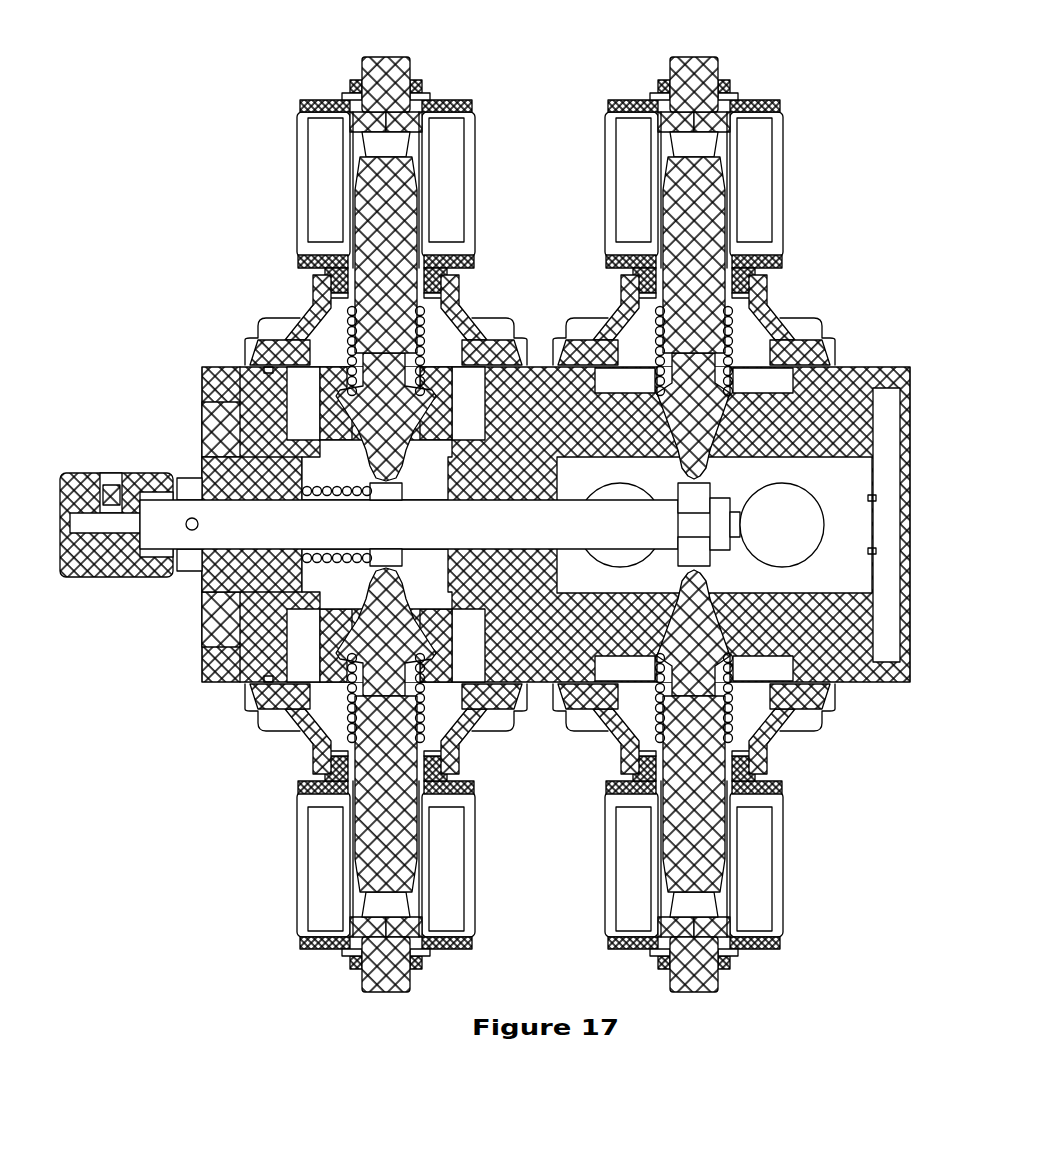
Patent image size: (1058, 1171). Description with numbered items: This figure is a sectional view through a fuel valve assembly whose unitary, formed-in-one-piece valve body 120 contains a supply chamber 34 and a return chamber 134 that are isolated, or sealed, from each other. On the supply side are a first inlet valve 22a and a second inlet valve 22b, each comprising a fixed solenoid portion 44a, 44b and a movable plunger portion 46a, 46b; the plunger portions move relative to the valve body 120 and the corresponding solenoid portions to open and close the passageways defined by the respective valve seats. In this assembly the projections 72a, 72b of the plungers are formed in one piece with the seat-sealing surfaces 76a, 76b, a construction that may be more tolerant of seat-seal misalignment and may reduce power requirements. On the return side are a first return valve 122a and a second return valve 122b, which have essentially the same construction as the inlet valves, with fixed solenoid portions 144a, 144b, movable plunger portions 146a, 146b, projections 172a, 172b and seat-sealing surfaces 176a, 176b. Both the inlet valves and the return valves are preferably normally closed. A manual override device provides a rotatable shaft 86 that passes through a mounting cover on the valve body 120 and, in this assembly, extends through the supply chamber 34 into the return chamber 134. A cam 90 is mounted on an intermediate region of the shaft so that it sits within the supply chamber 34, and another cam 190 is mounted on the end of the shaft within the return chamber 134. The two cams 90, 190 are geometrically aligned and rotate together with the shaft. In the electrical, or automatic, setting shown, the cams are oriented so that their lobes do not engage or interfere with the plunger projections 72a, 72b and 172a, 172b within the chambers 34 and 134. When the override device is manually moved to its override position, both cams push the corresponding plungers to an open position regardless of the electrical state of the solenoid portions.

The first inlet valve 22a is at (370, 823).
The second inlet valve 22b is at (369, 217).
The supply chamber 34 is at (425, 577).
The fixed solenoid portion 44a is at (322, 948).
The fixed solenoid portion 44b is at (452, 100).
The movable plunger portion 46a is at (396, 818).
The movable plunger portion 46b is at (396, 290).
The projection 72a is at (355, 600).
The projection 72b is at (355, 412).
The seat-sealing surface 76a is at (345, 618).
The seat-sealing surface 76b is at (345, 412).
The shaft 86 is at (80, 490).
The cam 90 is at (398, 490).
The valve body 120 is at (850, 387).
The first return valve 122a is at (691, 823).
The second return valve 122b is at (690, 217).
The return chamber 134 is at (862, 492).
The fixed solenoid portion 144a is at (790, 918).
The fixed solenoid portion 144b is at (764, 100).
The movable plunger portion 146a is at (708, 773).
The movable plunger portion 146b is at (708, 213).
The projection 172a is at (748, 610).
The projection 172b is at (722, 462).
The seat-sealing surface 176a is at (800, 637).
The seat-sealing surface 176b is at (760, 420).
The cam 190 is at (697, 502).